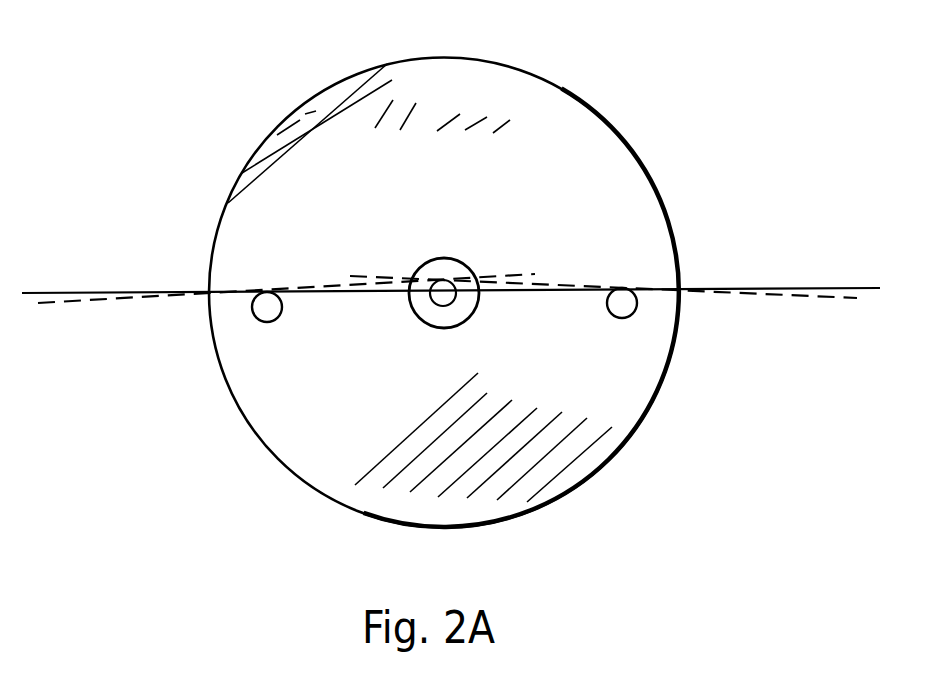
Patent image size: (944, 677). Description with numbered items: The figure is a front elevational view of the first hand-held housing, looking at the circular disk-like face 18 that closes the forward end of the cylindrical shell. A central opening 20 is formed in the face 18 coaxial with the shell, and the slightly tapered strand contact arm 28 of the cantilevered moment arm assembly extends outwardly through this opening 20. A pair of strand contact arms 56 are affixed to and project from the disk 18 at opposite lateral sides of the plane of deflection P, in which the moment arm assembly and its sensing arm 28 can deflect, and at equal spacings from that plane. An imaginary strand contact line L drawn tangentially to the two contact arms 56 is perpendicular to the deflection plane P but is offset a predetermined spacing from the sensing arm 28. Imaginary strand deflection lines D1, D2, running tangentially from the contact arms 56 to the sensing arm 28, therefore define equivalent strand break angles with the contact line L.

The circular disk-like face 18 is at (597, 408).
The plane of deflection P is at (450, 95).
The strand contact line L is at (822, 287).
The strand deflection line D1 is at (527, 275).
The strand deflection line D2 is at (358, 272).
The strand contact arms 56 is at (265, 323).
The central opening 20 is at (473, 313).
The strand contact arm 28 is at (444, 297).